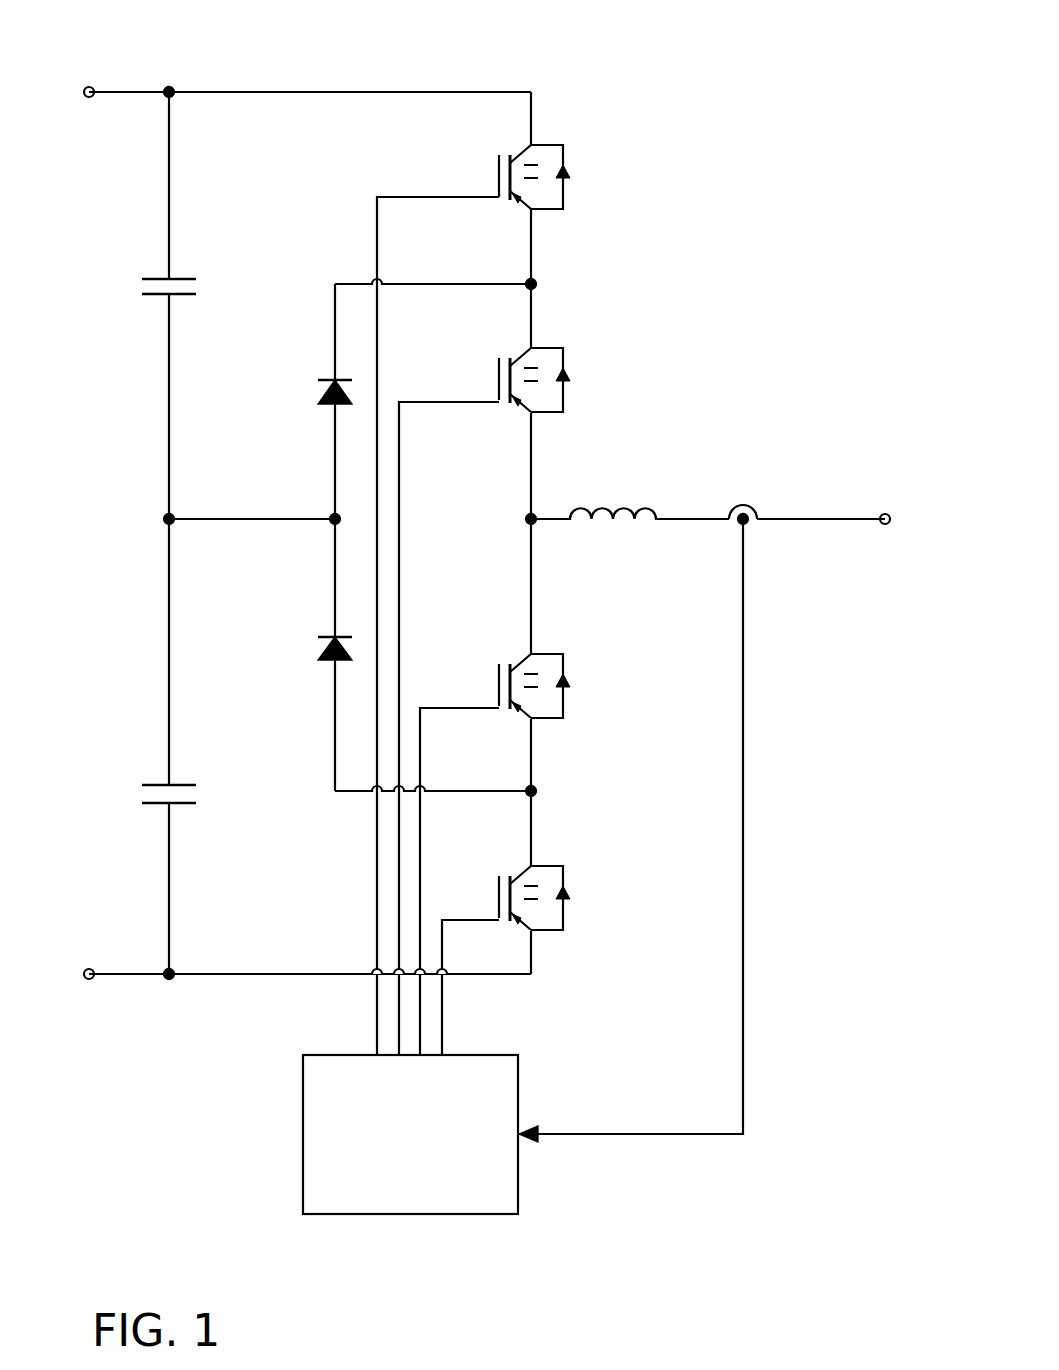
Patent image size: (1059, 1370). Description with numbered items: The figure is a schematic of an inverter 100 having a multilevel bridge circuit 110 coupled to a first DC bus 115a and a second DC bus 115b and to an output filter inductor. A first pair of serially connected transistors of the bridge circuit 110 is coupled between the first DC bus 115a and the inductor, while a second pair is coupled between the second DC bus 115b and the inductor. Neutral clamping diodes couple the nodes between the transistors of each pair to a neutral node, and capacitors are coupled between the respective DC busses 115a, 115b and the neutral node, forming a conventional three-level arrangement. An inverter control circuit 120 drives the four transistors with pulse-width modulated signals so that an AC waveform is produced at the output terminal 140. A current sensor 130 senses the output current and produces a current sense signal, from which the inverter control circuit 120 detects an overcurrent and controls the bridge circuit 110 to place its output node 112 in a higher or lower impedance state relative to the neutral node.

The inverter 100 is at (843, 28).
The multilevel bridge circuit 110 is at (588, 70).
The output node 112 is at (516, 509).
The first DC bus 115a is at (137, 95).
The second DC bus 115b is at (137, 977).
The inverter control circuit 120 is at (410, 1216).
The current sensor 130 is at (742, 498).
The output terminal 140 is at (879, 537).